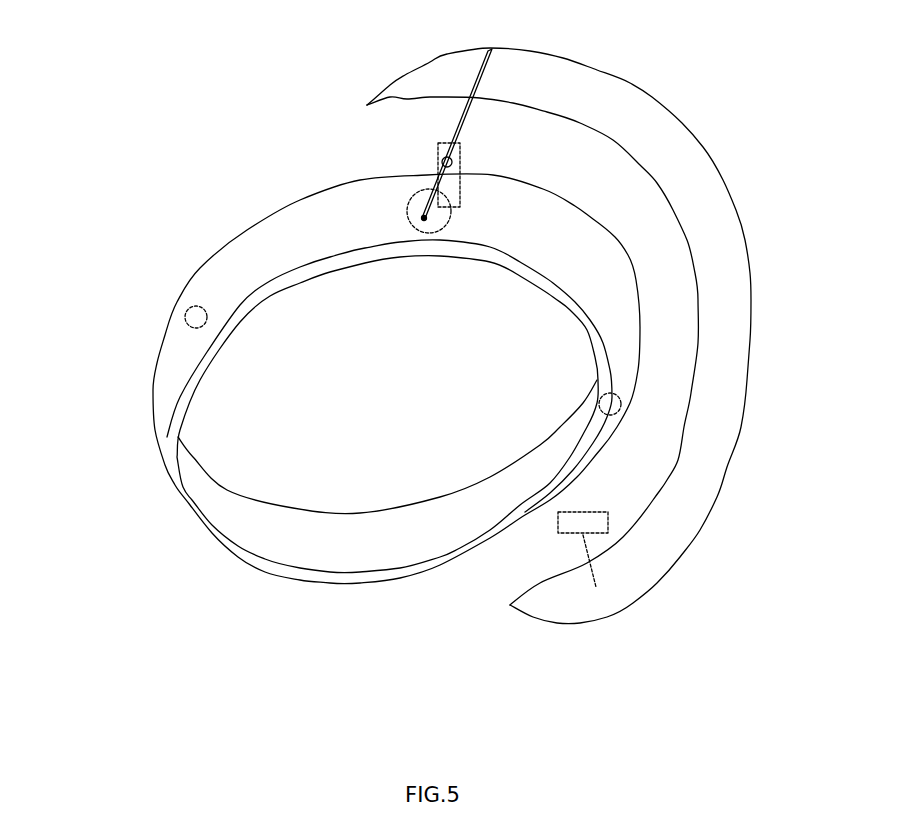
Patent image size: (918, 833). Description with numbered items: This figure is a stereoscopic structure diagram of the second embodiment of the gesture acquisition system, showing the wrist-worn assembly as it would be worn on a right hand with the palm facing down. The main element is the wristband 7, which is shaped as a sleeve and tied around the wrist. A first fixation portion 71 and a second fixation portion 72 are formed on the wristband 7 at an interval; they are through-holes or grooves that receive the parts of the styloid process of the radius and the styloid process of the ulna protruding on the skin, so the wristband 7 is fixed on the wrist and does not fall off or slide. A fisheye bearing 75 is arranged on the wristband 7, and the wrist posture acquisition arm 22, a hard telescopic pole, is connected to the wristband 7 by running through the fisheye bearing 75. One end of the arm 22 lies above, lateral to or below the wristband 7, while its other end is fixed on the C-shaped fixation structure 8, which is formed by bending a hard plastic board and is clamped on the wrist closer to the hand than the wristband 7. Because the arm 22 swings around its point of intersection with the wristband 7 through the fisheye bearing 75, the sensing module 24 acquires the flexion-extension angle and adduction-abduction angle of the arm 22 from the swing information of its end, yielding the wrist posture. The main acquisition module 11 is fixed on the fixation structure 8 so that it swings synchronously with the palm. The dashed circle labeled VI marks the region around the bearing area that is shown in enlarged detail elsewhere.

The wristband 7 is at (233, 262).
The first fixation portion 71 is at (192, 313).
The second fixation portion 72 is at (620, 410).
The fixation structure 8 is at (698, 307).
The wrist posture acquisition arm 22 is at (453, 132).
The fisheye bearing 75 is at (437, 151).
The sensing module 24 is at (437, 177).
The detail view VI is at (452, 222).
The main acquisition module 11 is at (558, 533).